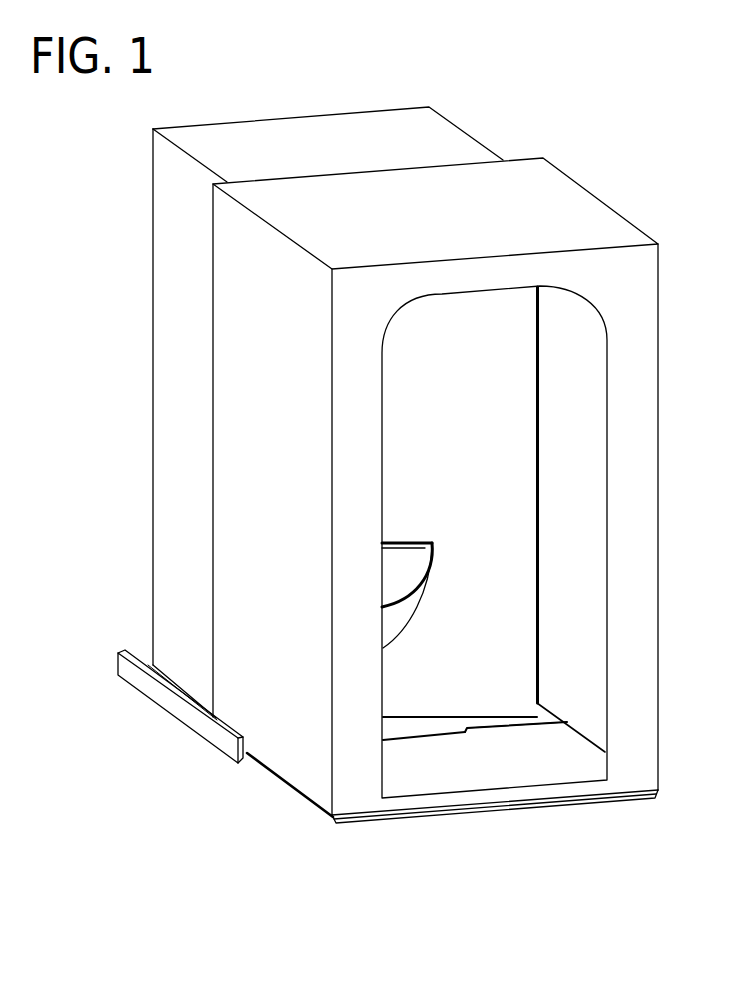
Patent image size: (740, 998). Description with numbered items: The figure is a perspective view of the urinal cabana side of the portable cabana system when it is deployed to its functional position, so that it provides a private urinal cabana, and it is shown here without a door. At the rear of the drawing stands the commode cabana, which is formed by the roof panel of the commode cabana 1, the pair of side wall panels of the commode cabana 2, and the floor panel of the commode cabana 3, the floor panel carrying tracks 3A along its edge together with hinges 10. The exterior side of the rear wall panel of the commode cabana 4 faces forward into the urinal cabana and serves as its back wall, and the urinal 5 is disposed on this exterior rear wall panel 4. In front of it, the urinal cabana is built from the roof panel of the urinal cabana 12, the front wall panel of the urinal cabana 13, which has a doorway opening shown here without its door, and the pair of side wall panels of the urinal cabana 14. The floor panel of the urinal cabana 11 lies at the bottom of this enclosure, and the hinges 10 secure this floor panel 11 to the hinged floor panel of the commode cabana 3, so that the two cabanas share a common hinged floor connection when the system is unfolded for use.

The roof panel of the commode cabana 1 is at (328, 144).
The side wall panels of the commode cabana 2 is at (184, 423).
The floor panel of the commode cabana 3 is at (143, 683).
The tracks 3A is at (152, 665).
The rear wall panel of the commode cabana 4 is at (460, 502).
The urinal 5 is at (407, 595).
The hinges 10 is at (475, 730).
The floor panel of the urinal cabana 11 is at (494, 737).
The roof panel of the urinal cabana 12 is at (435, 213).
The front wall panel of the urinal cabana 13 is at (495, 550).
The side wall panels of the urinal cabana 14 is at (435, 500).